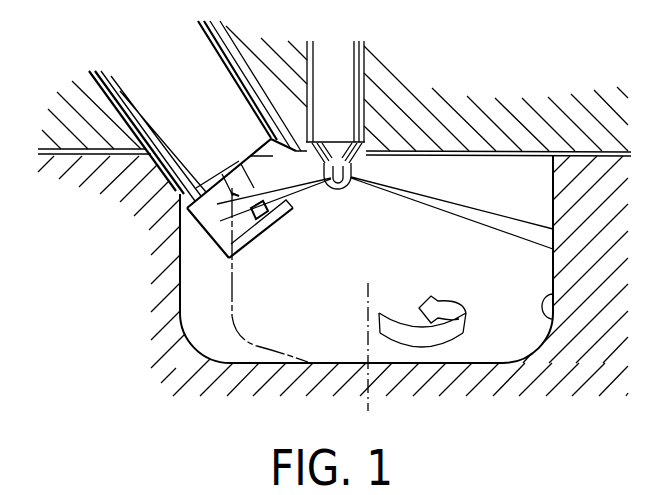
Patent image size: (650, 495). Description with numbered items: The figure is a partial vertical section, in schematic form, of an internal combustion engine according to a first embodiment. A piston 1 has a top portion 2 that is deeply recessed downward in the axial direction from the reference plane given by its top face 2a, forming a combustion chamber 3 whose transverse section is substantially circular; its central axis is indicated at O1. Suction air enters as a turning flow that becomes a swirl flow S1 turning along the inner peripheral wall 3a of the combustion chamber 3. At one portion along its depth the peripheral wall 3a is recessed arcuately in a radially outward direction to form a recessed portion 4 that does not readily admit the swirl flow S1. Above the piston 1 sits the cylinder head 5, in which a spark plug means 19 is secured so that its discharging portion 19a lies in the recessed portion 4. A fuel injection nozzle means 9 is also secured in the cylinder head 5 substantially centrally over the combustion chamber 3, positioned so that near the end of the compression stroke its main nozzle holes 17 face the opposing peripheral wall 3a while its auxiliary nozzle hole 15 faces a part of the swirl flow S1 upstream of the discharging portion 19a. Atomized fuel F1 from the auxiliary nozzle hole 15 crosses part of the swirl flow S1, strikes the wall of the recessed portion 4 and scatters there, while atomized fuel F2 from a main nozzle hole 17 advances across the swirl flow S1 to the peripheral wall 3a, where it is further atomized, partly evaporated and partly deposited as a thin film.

The piston 1 is at (172, 362).
The top portion of the piston 2 is at (583, 190).
The top face of the piston 2a is at (563, 153).
The combustion chamber 3 is at (378, 270).
The inner peripheral wall of the combustion chamber 3a is at (555, 322).
The recessed portion 4 is at (180, 264).
The cylinder head 5 is at (463, 123).
The fuel injection nozzle means 9 is at (366, 90).
The auxiliary nozzle hole 15 is at (320, 173).
The main nozzle holes 17 is at (356, 173).
The spark plug means 19 is at (110, 78).
The discharging portion of the spark plug means 19a is at (254, 251).
The atomized fuel F1 is at (297, 198).
The atomized fuel F2 is at (487, 220).
The swirl flow S1 is at (463, 325).
The chamber axis O1 is at (369, 403).